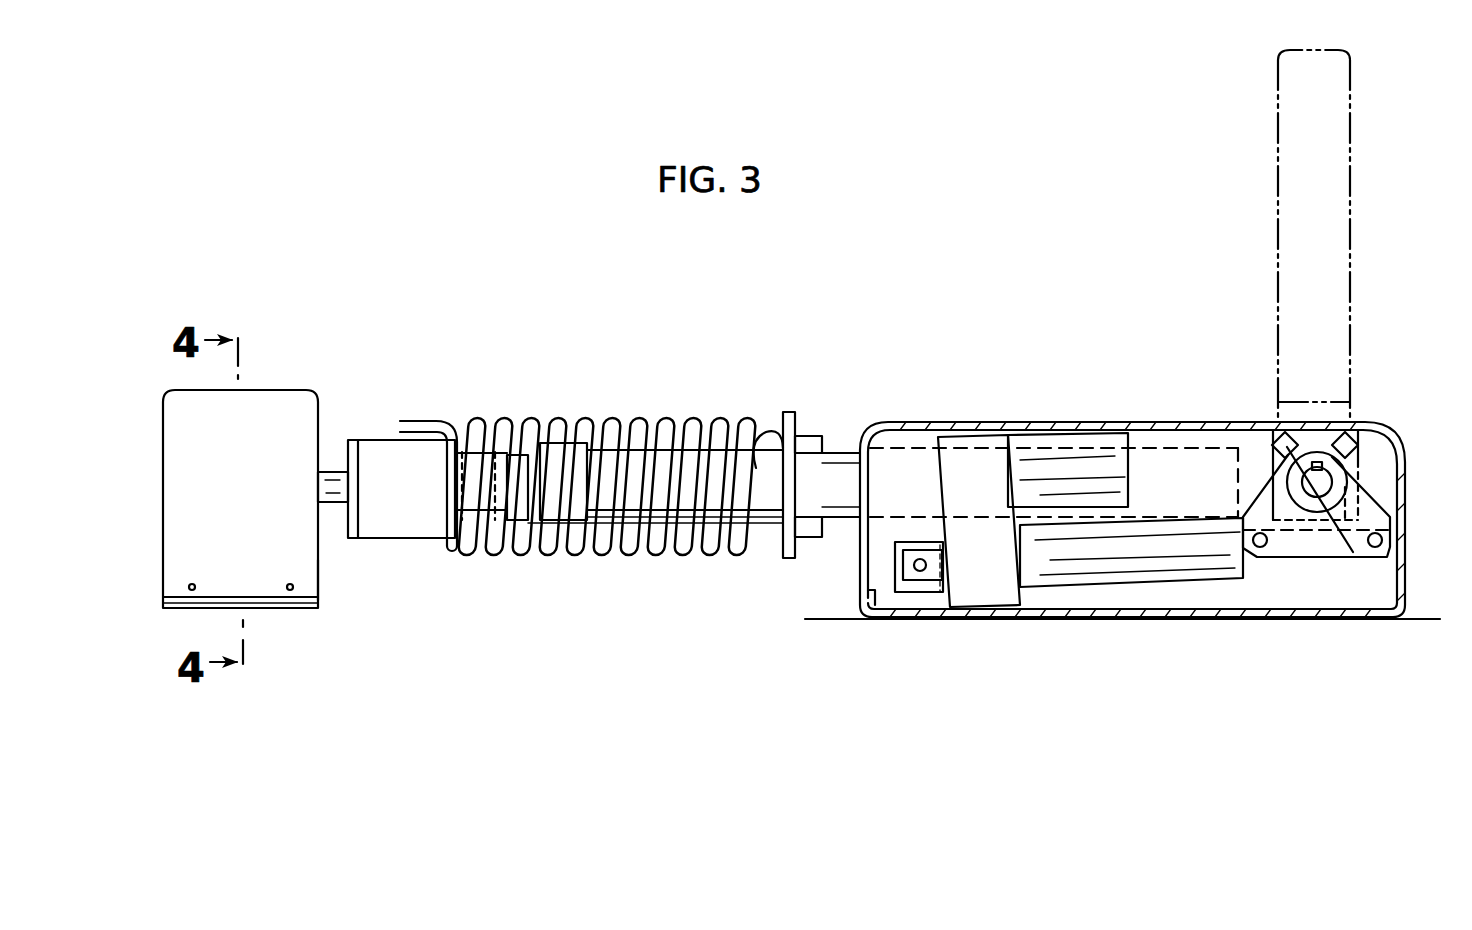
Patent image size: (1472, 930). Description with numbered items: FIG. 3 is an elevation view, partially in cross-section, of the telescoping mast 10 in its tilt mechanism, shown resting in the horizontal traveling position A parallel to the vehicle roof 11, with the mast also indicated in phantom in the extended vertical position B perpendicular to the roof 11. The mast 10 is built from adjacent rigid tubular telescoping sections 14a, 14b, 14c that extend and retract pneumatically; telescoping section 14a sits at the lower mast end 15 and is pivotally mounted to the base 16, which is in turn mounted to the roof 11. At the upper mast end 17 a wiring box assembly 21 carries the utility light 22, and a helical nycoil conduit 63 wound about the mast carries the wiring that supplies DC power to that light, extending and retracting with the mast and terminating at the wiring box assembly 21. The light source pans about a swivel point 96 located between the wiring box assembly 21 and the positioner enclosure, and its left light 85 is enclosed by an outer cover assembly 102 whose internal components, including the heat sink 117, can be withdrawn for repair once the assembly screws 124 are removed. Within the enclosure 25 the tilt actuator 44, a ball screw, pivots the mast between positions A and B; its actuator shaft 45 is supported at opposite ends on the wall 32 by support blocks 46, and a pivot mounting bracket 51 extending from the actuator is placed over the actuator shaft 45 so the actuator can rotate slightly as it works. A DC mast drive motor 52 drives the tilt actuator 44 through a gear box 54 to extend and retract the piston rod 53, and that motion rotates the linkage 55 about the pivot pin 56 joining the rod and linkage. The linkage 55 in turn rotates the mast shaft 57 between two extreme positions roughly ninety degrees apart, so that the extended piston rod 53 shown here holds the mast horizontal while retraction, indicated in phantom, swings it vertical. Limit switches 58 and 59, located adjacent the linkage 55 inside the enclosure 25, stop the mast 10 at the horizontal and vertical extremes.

The telescoping mast 10 is at (841, 364).
The roof 11 is at (845, 621).
The telescoping section 14a is at (862, 432).
The telescoping section 14b is at (523, 522).
The telescoping section 14c is at (466, 535).
The lower mast end 15 is at (1186, 445).
The base 16 is at (840, 573).
The upper mast end 17 is at (458, 465).
The wiring box assembly 21 is at (376, 451).
The utility light 22 is at (215, 451).
The enclosure 25 is at (946, 420).
The wall 32 is at (1009, 421).
The tilt actuator 44 is at (1150, 580).
The actuator shaft 45 is at (917, 571).
The support block 46 is at (895, 548).
The pivot mounting bracket 51 is at (934, 579).
The DC mast drive motor 52 is at (1086, 432).
The piston rod 53 is at (1313, 558).
The motor block 54 is at (990, 583).
The linkage 55 is at (1262, 495).
The pivot pin 56 is at (1260, 548).
The mast shaft 57 is at (1322, 483).
The limit switch 58 is at (1281, 440).
The limit switch 59 is at (1350, 440).
The nycoil conduit 63 is at (597, 421).
The left light 85 is at (323, 575).
The swivel point 96 is at (331, 472).
The outer cover assembly 102 is at (176, 517).
The heat sink 117 is at (270, 608).
The assembly screws 124 is at (190, 591).
The traveling position A is at (733, 402).
The extended vertical position B is at (1364, 170).